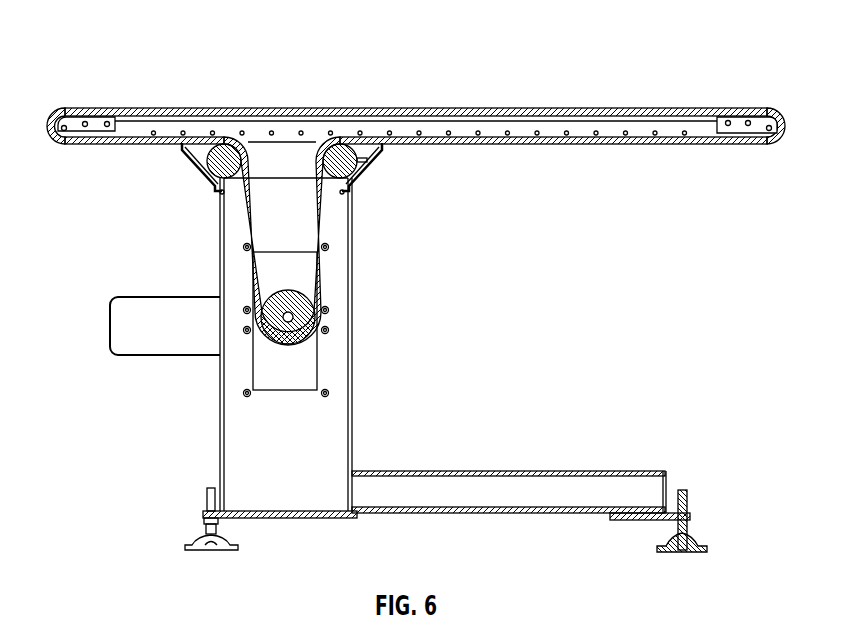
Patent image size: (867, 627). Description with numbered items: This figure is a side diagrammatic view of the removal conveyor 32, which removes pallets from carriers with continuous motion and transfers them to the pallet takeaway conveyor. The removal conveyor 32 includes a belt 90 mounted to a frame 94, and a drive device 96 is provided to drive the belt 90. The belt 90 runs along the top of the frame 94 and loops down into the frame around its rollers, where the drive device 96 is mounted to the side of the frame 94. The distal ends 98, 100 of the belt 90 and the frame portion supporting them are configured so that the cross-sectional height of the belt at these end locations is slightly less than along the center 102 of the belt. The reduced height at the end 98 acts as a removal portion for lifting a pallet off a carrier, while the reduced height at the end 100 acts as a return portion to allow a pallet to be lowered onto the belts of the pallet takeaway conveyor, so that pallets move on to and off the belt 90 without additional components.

The removal conveyor 32 is at (509, 58).
The belt 90 is at (232, 107).
The center of the belts 102 is at (383, 107).
The distal end of belt 100 is at (62, 134).
The distal end of belt 98 is at (769, 131).
The drive device 96 is at (143, 296).
The frame 94 is at (352, 422).